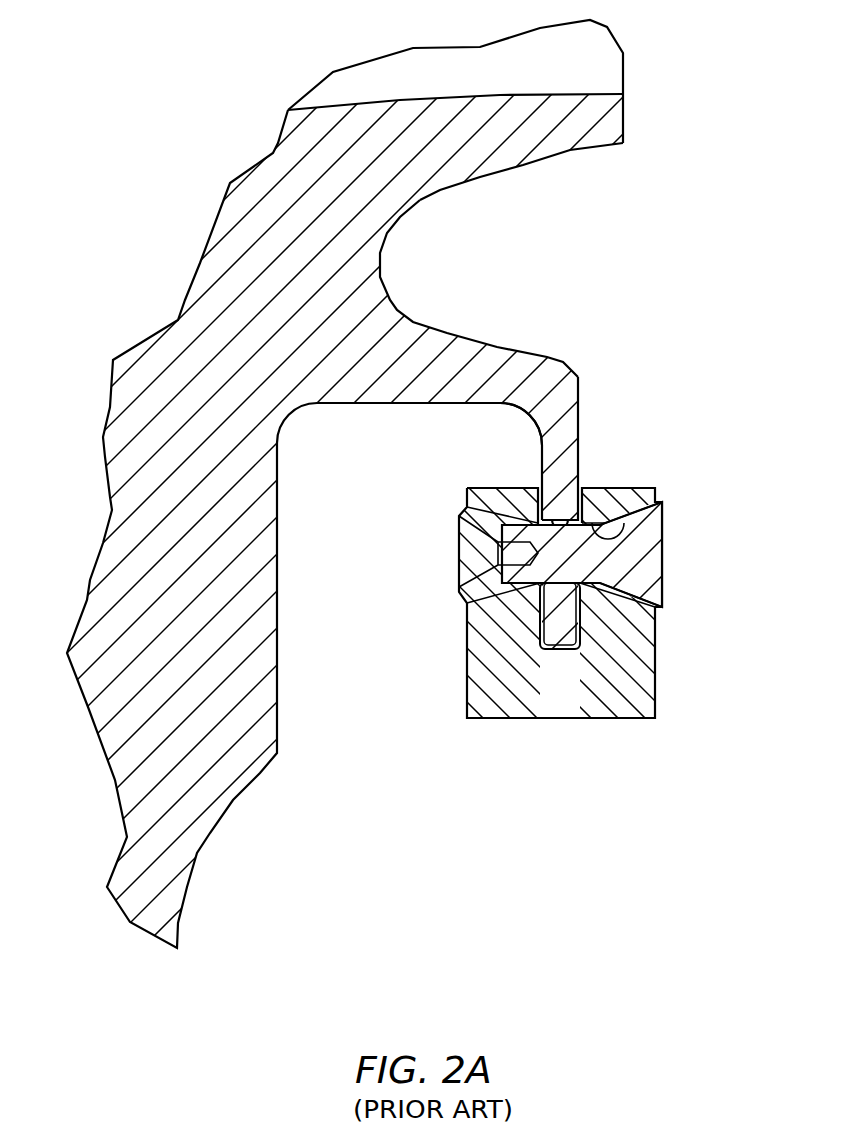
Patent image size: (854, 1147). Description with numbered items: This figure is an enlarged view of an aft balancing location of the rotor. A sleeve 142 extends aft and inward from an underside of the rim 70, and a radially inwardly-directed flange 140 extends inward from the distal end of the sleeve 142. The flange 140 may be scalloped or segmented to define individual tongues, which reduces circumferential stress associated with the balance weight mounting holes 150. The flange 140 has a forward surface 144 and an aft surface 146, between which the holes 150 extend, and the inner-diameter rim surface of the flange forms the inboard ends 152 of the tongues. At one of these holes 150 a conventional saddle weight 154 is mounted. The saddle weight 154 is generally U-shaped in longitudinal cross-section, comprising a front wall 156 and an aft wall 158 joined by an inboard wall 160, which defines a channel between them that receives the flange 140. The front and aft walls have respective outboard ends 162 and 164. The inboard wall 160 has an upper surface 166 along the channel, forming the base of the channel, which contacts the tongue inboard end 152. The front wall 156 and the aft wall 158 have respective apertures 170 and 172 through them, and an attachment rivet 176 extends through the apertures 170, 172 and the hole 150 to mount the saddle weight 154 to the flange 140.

The rim 70 is at (568, 130).
The sleeve 142 is at (490, 370).
The flange 140 is at (565, 455).
The forward surface 144 is at (542, 470).
The aft surface 146 is at (578, 462).
The balance weight mounting hole 150 is at (592, 522).
The outboard end of aft wall 164 is at (614, 488).
The aperture in aft wall 172 is at (662, 518).
The attachment rivet 176 is at (630, 556).
The outboard end of front wall 162 is at (480, 480).
The aperture in front wall 170 is at (498, 558).
The front wall 156 is at (495, 630).
The aft wall 158 is at (627, 633).
The tongue inboard end 152 is at (566, 648).
The upper surface of inboard wall 166 is at (538, 648).
The inboard wall 160 is at (567, 697).
The saddle weight 154 is at (547, 735).